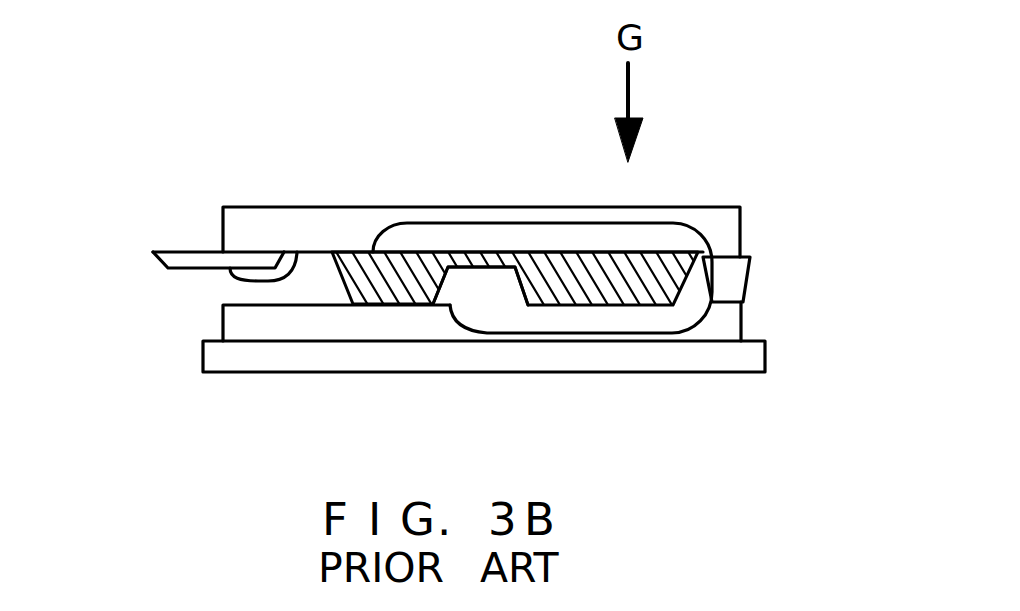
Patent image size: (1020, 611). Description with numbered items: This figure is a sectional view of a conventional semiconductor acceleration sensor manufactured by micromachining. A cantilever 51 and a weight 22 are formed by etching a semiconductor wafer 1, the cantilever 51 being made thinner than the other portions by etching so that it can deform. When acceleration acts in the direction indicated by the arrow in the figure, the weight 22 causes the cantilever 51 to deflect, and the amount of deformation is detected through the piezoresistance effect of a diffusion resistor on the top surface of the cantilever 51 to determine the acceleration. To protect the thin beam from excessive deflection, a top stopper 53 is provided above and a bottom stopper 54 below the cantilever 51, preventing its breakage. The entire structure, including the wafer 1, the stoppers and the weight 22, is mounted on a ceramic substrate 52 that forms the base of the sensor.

The semiconductor wafer 1 is at (730, 290).
The weight 22 is at (570, 268).
The cantilever 51 is at (497, 268).
The ceramic substrate 52 is at (717, 363).
The top stopper 53 is at (710, 223).
The bottom stopper 54 is at (242, 310).